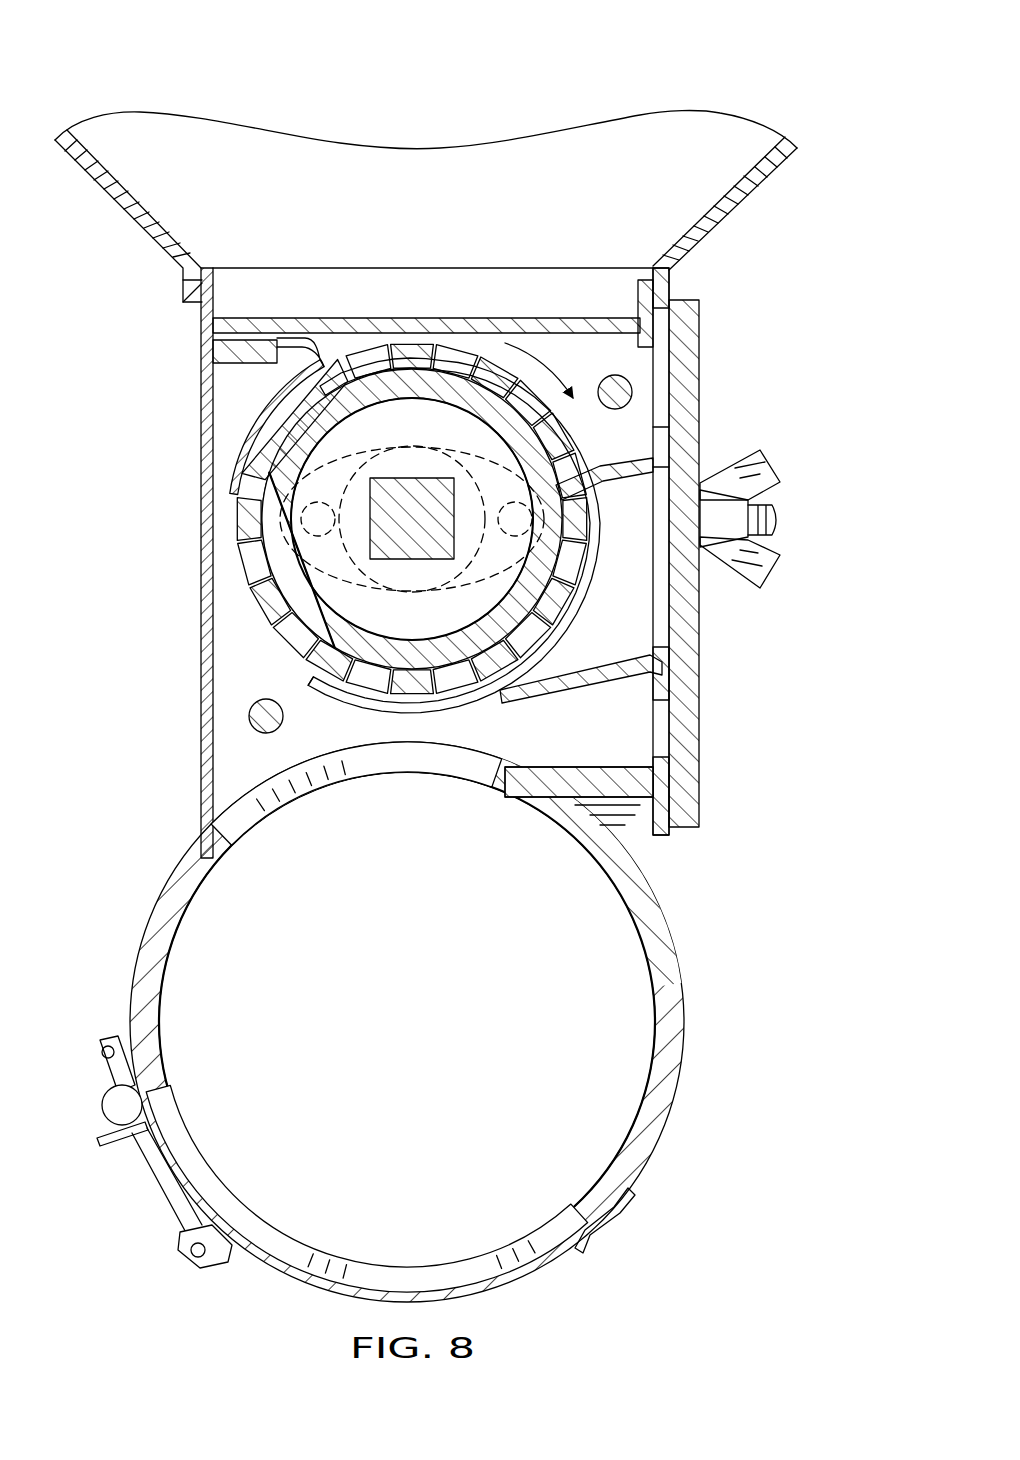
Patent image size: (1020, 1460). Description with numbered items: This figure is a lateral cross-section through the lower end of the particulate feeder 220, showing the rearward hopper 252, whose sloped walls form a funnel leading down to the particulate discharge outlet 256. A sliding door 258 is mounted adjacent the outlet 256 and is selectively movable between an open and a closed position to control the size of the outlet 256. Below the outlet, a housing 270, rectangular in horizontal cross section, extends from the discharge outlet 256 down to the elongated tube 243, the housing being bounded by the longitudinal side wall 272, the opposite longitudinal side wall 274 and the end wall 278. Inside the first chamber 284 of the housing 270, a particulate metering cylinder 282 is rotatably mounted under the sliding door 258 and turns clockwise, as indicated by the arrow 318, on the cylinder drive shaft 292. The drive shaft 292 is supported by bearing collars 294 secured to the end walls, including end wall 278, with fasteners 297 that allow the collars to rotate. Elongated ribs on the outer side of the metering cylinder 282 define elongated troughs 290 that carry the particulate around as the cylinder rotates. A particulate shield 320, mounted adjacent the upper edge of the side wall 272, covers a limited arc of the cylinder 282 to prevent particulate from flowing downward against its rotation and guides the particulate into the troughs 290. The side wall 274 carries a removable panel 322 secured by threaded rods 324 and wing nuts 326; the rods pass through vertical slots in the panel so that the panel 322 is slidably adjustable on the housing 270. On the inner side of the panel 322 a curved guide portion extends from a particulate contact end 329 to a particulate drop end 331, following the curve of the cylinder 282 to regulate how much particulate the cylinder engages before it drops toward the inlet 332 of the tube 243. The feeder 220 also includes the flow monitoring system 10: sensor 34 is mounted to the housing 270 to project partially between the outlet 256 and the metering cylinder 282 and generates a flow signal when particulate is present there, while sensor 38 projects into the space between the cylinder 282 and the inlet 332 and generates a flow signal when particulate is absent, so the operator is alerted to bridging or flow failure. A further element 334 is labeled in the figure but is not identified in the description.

The flow monitoring system 10 is at (258, 742).
The sensor 34 is at (633, 393).
The sensor 38 is at (248, 725).
The particulate feeder 220 is at (628, 88).
The elongated tube 243 is at (682, 978).
The rearward hopper 252 is at (240, 197).
The particulate discharge outlet 256 is at (429, 256).
The sliding door 258 is at (545, 318).
The housing 270 is at (185, 378).
The longitudinal side wall 272 is at (205, 540).
The longitudinal side wall 274 is at (705, 345).
The end wall 278 is at (632, 454).
The particulate metering cylinder 282 is at (255, 613).
The first chamber 284 is at (312, 645).
The elongated troughs 290 is at (545, 625).
The cylinder drive shaft 292 is at (405, 478).
The bearing collars 294 is at (410, 596).
The fasteners 297 is at (384, 466).
The arrow 318 is at (548, 351).
The particulate shield 320 is at (322, 340).
The removable panel 322 is at (705, 680).
The threaded rods 324 is at (778, 520).
The wing nuts 326 is at (770, 575).
The particulate contact end 329 is at (622, 465).
The particulate drop end 331 is at (308, 688).
The inlet 332 is at (295, 805).
The bottom plate 334 is at (208, 700).